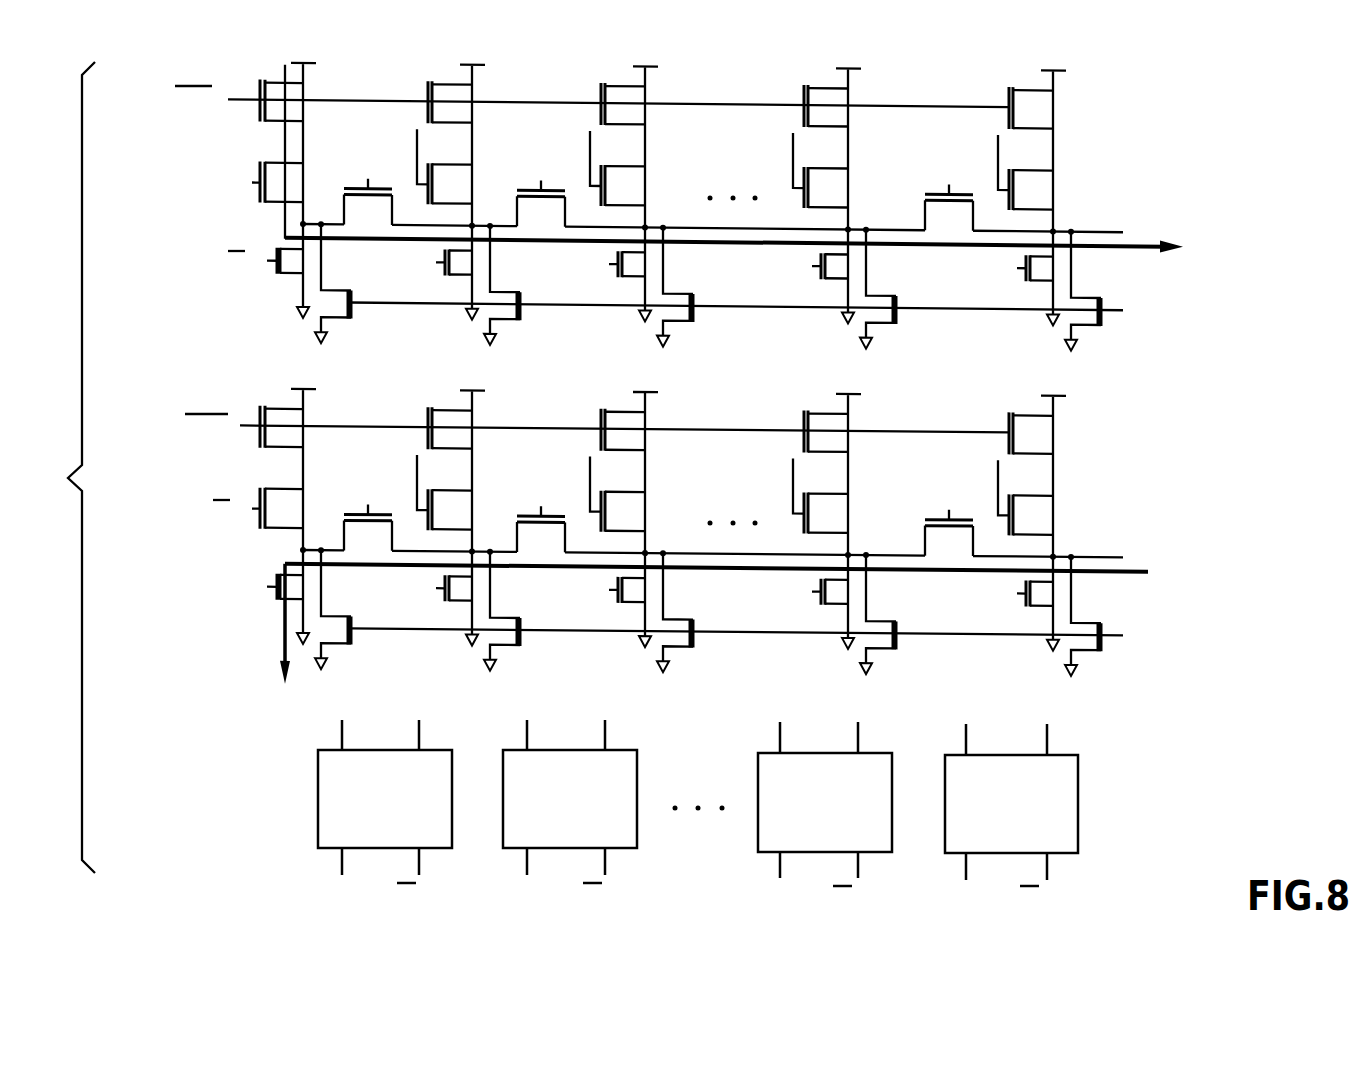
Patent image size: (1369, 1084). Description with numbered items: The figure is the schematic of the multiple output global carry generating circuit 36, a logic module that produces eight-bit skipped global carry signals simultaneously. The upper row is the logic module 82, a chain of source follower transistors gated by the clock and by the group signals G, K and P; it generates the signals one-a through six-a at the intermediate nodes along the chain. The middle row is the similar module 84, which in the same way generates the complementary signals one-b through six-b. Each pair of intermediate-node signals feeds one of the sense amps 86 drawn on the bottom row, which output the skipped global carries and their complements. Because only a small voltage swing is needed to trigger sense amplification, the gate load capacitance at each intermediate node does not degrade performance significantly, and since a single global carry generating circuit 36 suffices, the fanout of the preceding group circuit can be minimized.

The multiple output global carry generating circuit 36 is at (172, 589).
The logic module 82 is at (1191, 169).
The logic module 84 is at (1189, 518).
The sense amps 86 is at (1078, 798).